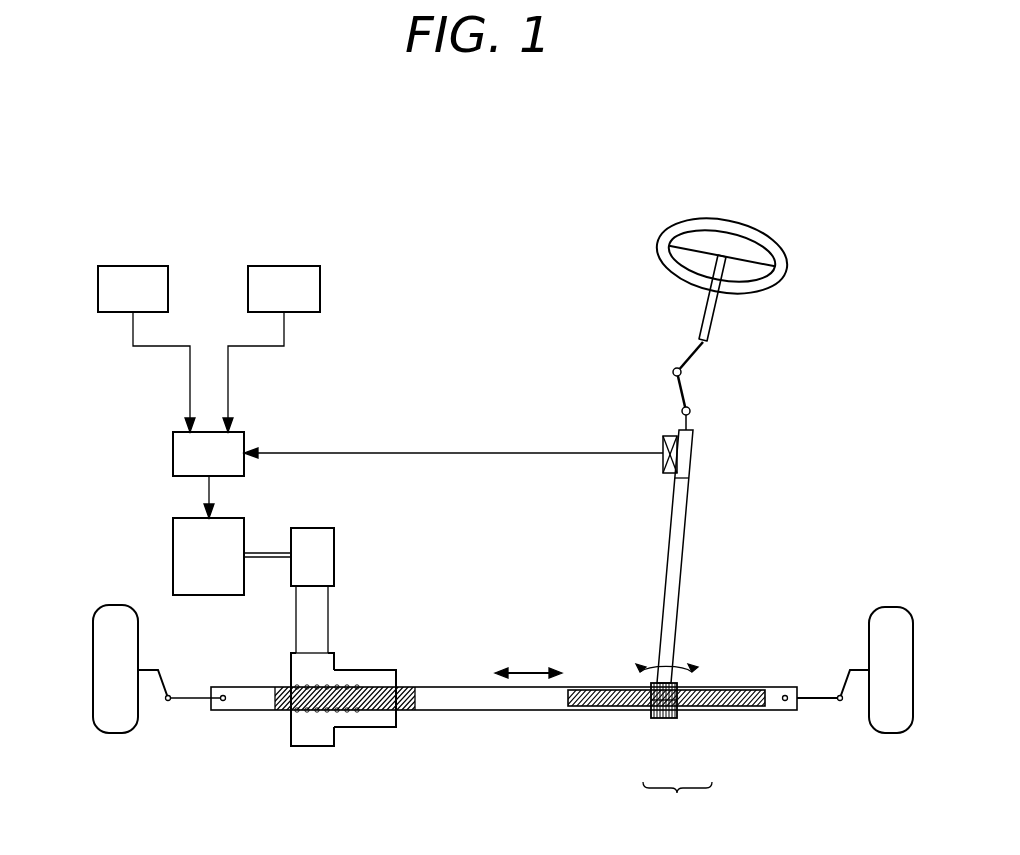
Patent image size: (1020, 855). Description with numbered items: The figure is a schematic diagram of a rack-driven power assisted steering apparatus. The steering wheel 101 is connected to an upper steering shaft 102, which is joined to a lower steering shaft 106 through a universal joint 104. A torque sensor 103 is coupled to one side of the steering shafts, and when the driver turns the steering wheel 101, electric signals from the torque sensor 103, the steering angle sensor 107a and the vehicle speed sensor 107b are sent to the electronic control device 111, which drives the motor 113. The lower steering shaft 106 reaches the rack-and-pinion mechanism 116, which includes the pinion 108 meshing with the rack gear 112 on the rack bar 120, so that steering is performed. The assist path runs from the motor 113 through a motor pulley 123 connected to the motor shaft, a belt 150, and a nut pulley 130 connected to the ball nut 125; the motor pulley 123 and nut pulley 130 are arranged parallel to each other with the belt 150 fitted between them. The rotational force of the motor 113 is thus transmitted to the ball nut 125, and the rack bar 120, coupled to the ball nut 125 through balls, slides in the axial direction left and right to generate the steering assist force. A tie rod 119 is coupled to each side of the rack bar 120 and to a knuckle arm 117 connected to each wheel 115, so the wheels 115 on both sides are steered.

The steering wheel 101 is at (678, 230).
The upper steering shaft 102 is at (710, 310).
The torque sensor 103 is at (661, 440).
The universal joint 104 is at (681, 372).
The lower steering shaft 106 is at (683, 506).
The steering angle sensor 107a is at (133, 266).
The vehicle speed sensor 107b is at (284, 266).
The pinion 108 is at (660, 720).
The electronic control device 111 is at (173, 456).
The rack gear 112 is at (726, 708).
The motor 113 is at (180, 555).
The wheel 115 is at (105, 674).
The rack-and-pinion mechanism 116 is at (677, 804).
The knuckle arm 117 is at (165, 675).
The tie rod 119 is at (190, 705).
The rack bar 120 is at (506, 713).
The motor pulley 123 is at (322, 554).
The ball nut 125 is at (385, 672).
The nut pulley 130 is at (310, 738).
The belt 150 is at (322, 599).